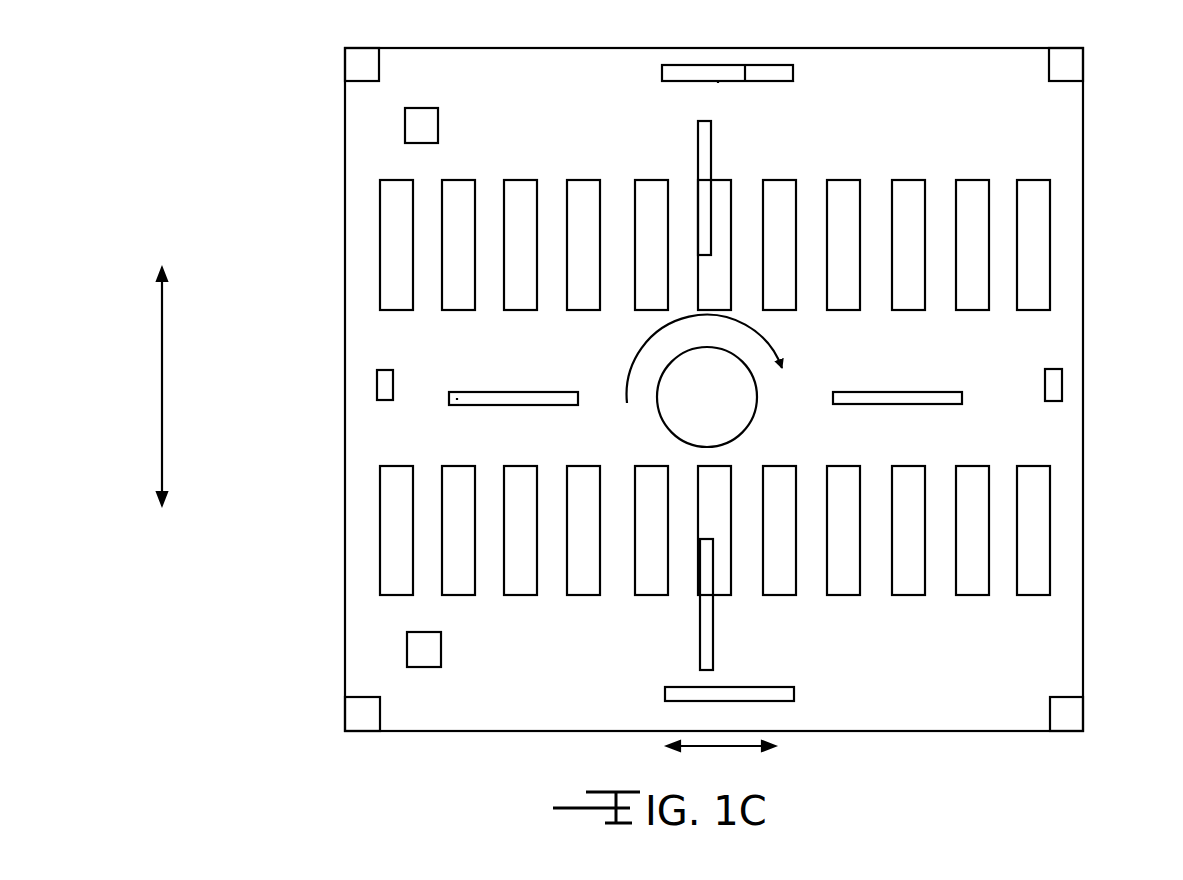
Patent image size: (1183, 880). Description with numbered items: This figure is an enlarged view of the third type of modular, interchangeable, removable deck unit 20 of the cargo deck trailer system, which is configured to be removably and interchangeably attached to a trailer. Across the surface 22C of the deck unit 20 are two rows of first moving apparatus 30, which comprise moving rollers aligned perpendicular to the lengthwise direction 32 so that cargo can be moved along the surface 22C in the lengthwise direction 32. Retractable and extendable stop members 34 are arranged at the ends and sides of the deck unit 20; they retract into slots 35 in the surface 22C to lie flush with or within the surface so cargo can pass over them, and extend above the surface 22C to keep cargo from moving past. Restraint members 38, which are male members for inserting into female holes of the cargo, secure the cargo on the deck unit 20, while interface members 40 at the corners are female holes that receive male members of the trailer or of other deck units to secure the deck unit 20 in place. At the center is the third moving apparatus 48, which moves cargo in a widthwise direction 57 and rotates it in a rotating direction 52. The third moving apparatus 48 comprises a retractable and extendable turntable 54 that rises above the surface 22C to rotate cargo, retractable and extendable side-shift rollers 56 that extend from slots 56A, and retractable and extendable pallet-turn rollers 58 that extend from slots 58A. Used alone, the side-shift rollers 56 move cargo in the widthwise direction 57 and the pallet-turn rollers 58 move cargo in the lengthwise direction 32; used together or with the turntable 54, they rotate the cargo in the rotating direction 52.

The deck unit 20 is at (826, 63).
The surface 22C is at (593, 713).
The first moving apparatus 30 is at (523, 595).
The lengthwise direction 32 is at (705, 748).
The stop members 34 is at (693, 75).
The slots 35 is at (718, 83).
The restraint members 38 is at (420, 123).
The interface members 40 is at (345, 48).
The third moving apparatus 48 is at (698, 135).
The rotating direction 52 is at (785, 345).
The turntable 54 is at (745, 430).
The side-shift rollers 56 is at (530, 406).
The slots 56A is at (457, 398).
The widthwise direction 57 is at (162, 395).
The pallet-turn rollers 58 is at (780, 82).
The slots 58A is at (747, 68).